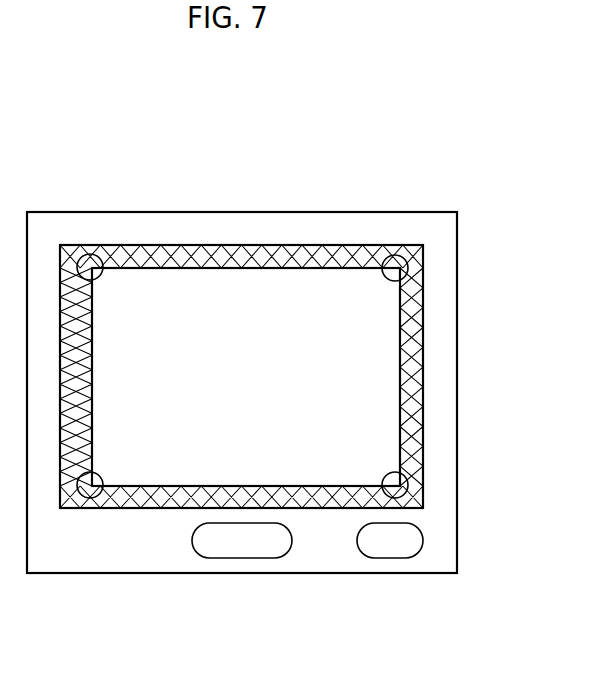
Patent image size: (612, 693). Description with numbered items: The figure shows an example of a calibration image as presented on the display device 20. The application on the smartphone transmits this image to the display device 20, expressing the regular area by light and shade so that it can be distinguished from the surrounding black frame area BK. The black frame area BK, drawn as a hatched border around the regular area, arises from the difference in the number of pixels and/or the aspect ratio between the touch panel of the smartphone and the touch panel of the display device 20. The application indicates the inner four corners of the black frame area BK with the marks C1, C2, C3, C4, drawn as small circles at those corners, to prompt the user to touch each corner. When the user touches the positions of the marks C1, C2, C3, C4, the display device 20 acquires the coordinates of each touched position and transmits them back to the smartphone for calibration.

The display device 20 is at (242, 345).
The black frame area BK is at (413, 375).
The mark C1 is at (90, 254).
The mark C2 is at (395, 255).
The mark C3 is at (92, 498).
The mark C4 is at (402, 498).